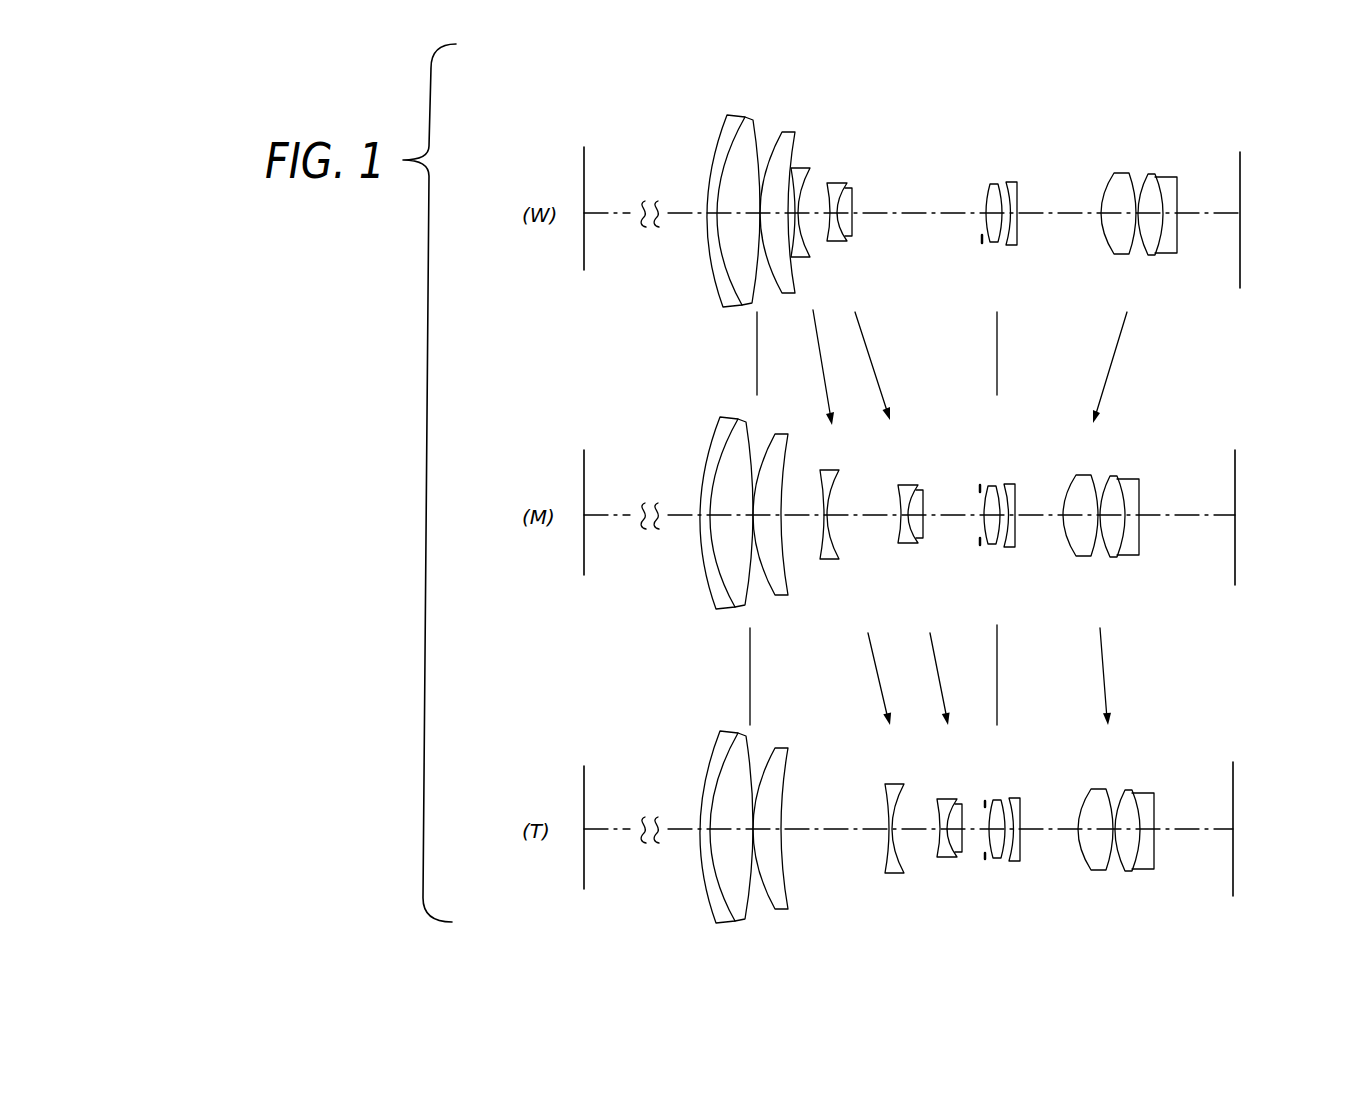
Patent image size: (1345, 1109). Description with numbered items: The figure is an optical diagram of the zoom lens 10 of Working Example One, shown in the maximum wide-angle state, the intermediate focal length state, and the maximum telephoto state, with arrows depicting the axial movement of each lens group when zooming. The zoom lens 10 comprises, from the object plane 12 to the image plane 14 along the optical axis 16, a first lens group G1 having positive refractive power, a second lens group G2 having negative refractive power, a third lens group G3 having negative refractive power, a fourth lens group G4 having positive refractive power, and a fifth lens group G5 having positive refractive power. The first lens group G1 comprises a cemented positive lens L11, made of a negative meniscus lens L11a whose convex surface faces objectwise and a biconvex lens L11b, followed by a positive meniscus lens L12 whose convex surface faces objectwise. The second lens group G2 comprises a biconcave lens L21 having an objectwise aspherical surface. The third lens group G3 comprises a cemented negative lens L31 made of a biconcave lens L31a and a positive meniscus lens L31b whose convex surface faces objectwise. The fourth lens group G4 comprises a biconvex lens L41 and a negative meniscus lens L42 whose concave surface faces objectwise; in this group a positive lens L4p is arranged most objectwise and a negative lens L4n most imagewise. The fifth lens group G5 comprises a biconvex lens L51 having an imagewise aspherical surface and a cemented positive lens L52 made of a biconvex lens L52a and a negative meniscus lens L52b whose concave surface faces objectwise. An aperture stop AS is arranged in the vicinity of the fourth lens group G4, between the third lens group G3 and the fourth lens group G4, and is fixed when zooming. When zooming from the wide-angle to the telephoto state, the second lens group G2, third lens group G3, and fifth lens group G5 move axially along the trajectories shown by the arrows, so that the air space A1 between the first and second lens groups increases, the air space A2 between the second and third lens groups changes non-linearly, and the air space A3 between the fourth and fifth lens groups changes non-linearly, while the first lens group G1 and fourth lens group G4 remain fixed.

The zoom lens 10 is at (870, 114).
The object plane 12 is at (584, 268).
The image plane 14 is at (1241, 163).
The optical axis 16 is at (1201, 214).
The first lens group G1 is at (798, 107).
The second lens group G2 is at (812, 154).
The third lens group G3 is at (853, 168).
The fourth lens group G4 is at (1020, 153).
The fifth lens group G5 is at (1188, 152).
The aperture stop AS is at (972, 185).
The air space A1 is at (797, 275).
The air space A2 is at (822, 247).
The air space A3 is at (1037, 239).
The cemented positive lens L11 is at (748, 409).
The negative meniscus lens L11a is at (722, 625).
The biconvex lens L11b is at (740, 626).
The positive meniscus lens L12 is at (781, 597).
The biconcave lens L21 is at (833, 562).
The cemented negative lens L31 is at (930, 477).
The biconcave lens L31a is at (898, 545).
The positive meniscus lens L31b is at (920, 545).
The biconvex lens L41 is at (997, 485).
The negative meniscus lens L42 is at (1007, 485).
The positive lens L4p is at (993, 547).
The negative lens L4n is at (1008, 548).
The biconvex lens L51 is at (1087, 478).
The cemented positive lens L52 is at (1140, 469).
The biconvex lens L52a is at (1110, 558).
The negative meniscus lens L52b is at (1125, 558).